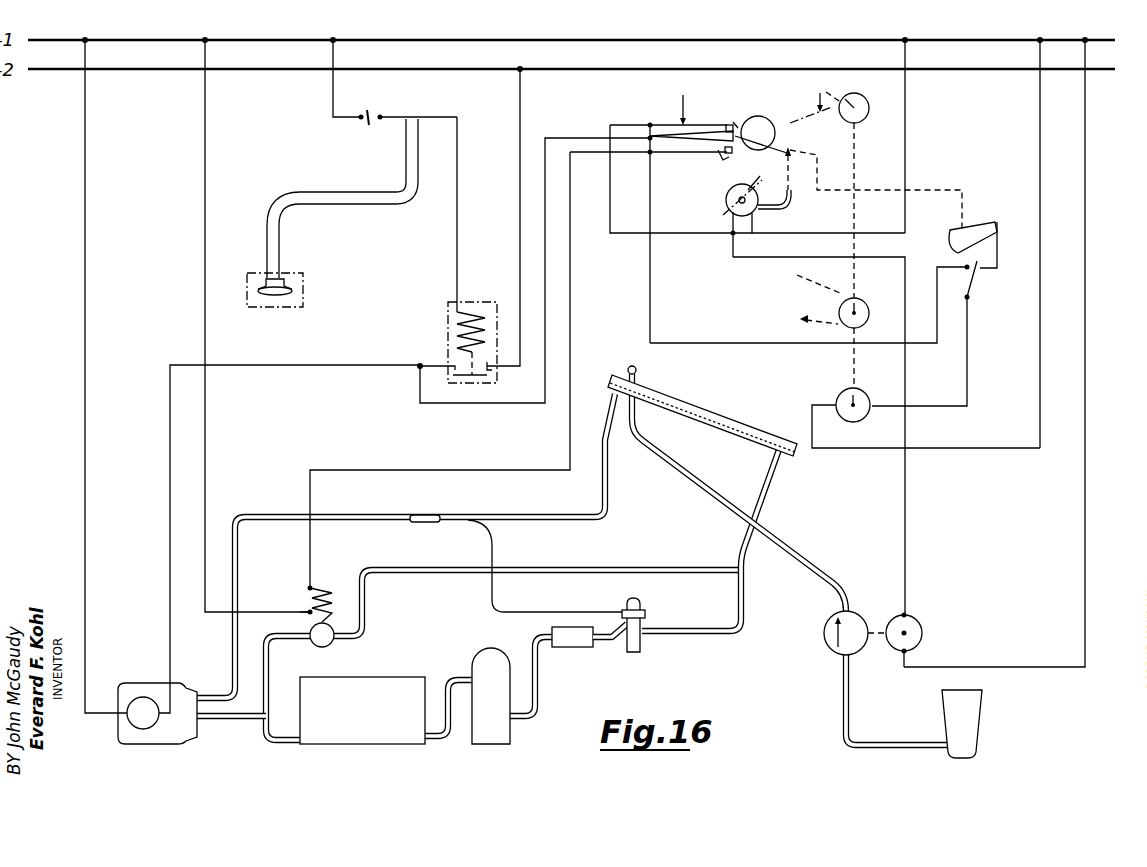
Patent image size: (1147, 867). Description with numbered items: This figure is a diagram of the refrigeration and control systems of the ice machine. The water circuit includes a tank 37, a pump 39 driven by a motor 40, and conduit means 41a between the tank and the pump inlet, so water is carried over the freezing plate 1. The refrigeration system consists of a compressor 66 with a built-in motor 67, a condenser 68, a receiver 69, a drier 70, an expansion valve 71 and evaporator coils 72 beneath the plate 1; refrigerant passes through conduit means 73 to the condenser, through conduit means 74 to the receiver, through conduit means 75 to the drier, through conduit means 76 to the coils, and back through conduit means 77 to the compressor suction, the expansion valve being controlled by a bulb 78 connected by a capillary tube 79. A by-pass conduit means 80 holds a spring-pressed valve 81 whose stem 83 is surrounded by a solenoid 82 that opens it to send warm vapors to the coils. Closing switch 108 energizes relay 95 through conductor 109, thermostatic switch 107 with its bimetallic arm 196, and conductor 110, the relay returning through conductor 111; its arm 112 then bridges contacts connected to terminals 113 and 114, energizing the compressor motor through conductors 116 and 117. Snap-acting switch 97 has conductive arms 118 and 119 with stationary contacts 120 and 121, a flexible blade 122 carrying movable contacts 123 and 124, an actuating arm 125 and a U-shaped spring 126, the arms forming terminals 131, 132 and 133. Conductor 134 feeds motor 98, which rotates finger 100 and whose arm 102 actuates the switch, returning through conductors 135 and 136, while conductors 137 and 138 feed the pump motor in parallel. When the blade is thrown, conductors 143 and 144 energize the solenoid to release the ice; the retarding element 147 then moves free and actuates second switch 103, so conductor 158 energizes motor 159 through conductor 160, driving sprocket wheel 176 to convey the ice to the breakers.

The plate 1 is at (702, 406).
The tank 37 is at (983, 720).
The pump 39 is at (825, 648).
The motor 40 is at (920, 620).
The conduit means 41a is at (875, 746).
The compressor 66 is at (118, 683).
The motor 67 is at (150, 730).
The condenser 68 is at (338, 677).
The receiver 69 is at (512, 740).
The drier 70 is at (580, 648).
The expansion valve 71 is at (648, 614).
The coils 72 is at (717, 420).
The conduit means 73 is at (278, 743).
The conduit means 74 is at (452, 741).
The conduit means 75 is at (540, 681).
The conduit means 76 is at (745, 601).
The conduit means 77 is at (612, 490).
The bulb 78 is at (430, 523).
The capillary tube 79 is at (490, 604).
The conduit means 80 is at (572, 567).
The valve 81 is at (312, 646).
The solenoid 82 is at (318, 588).
The stem 83 is at (308, 614).
The relay 95 is at (452, 315).
The switch 97 is at (684, 97).
The motor 98 is at (760, 207).
The finger 100 is at (727, 214).
The arm 102 is at (790, 200).
The second switch 103 is at (980, 290).
The thermostatic switch 107 is at (303, 280).
The switch 108 is at (356, 119).
The conductor 109 is at (291, 201).
The conductor 110 is at (352, 205).
The conductor 111 is at (518, 182).
The arm 112 is at (474, 385).
The terminal 113 is at (493, 372).
The terminal 114 is at (452, 362).
The conductor 116 is at (88, 348).
The conductor 117 is at (345, 368).
The conductive arm 118 is at (668, 130).
The conductive arm 119 is at (672, 153).
The stationary contact 120 is at (770, 110).
The stationary contact 121 is at (722, 161).
The flexible conductive blade 122 is at (725, 126).
The movable contact 123 is at (736, 124).
The movable contact 124 is at (740, 141).
The conductive actuating arm 125 is at (792, 152).
The U-shaped spring 126 is at (820, 104).
The terminal 131 is at (648, 124).
The terminal 132 is at (648, 137).
The terminal 133 is at (660, 160).
The conductor 134 is at (907, 85).
The conductor 135 is at (672, 236).
The conductor 136 is at (547, 290).
The conductor 137 is at (1087, 145).
The conductor 138 is at (907, 515).
The conductor 143 is at (207, 416).
The conductor 144 is at (345, 468).
The retarding element 147 is at (985, 222).
The conductor 158 is at (1038, 182).
The motor 159 is at (838, 396).
The conductor 160 is at (682, 343).
The sprocket wheel 176 is at (803, 320).
The bimetallic arm 196 is at (268, 297).